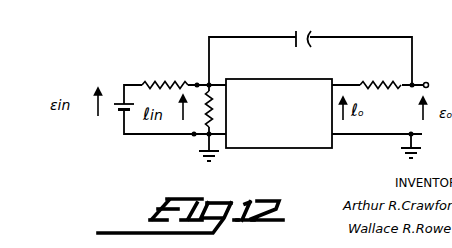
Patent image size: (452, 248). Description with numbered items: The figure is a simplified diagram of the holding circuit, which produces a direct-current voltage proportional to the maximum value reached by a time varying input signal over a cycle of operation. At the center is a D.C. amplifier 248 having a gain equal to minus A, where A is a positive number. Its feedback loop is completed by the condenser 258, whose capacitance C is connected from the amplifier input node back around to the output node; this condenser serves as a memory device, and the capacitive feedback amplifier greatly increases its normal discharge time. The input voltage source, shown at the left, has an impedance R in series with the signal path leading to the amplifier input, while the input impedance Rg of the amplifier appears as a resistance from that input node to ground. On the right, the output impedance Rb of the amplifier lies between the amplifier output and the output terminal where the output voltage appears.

The D.C. amplifier 248 is at (297, 148).
The condenser 258 is at (298, 25).
The capacitance of condenser C is at (298, 17).
The input voltage source impedance R is at (165, 70).
The input impedance Rg is at (200, 106).
The output impedance Rb is at (380, 72).